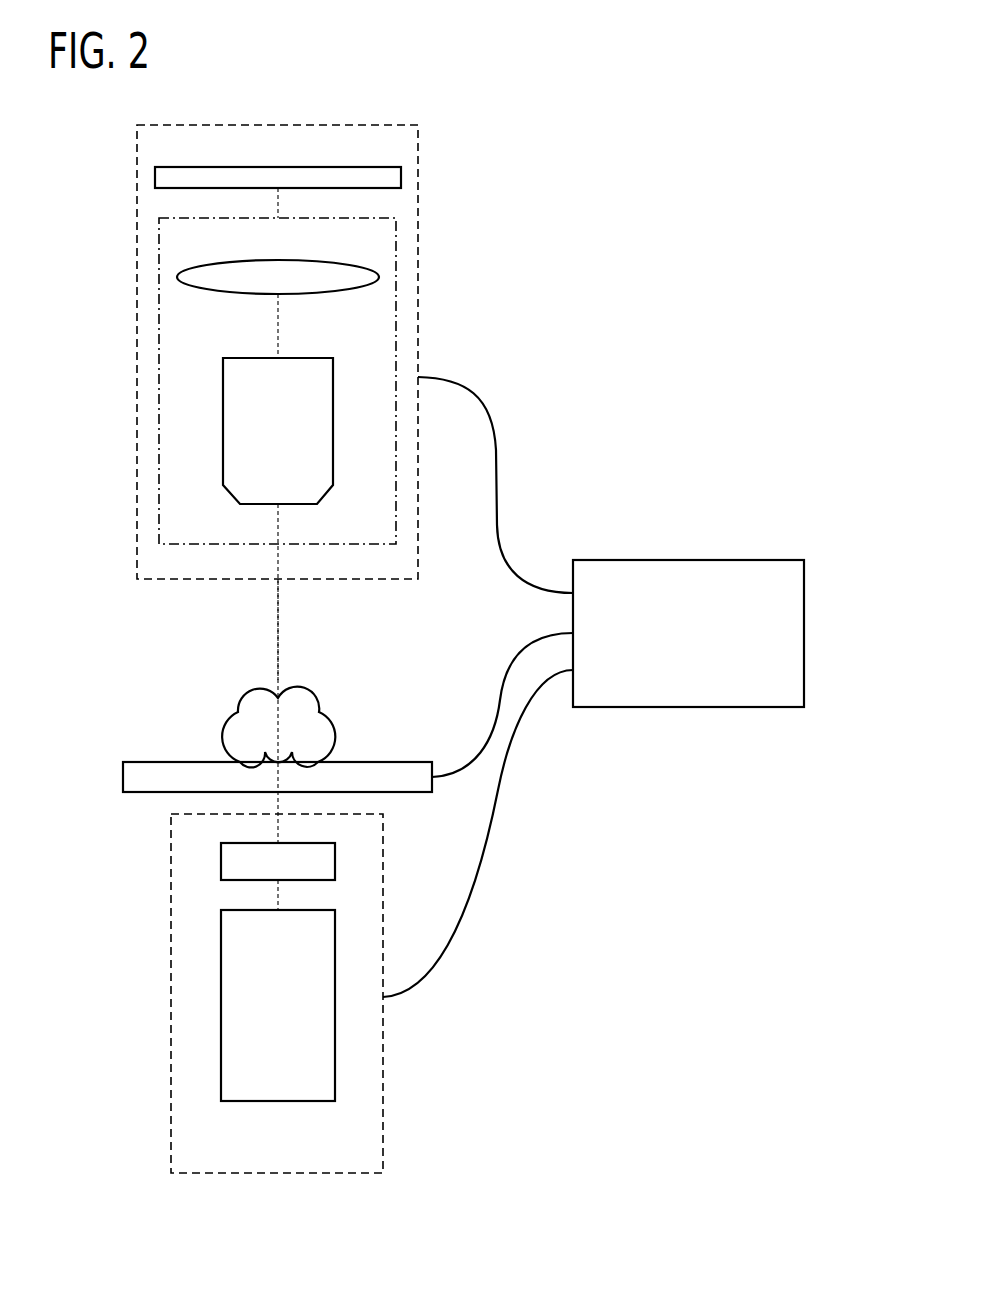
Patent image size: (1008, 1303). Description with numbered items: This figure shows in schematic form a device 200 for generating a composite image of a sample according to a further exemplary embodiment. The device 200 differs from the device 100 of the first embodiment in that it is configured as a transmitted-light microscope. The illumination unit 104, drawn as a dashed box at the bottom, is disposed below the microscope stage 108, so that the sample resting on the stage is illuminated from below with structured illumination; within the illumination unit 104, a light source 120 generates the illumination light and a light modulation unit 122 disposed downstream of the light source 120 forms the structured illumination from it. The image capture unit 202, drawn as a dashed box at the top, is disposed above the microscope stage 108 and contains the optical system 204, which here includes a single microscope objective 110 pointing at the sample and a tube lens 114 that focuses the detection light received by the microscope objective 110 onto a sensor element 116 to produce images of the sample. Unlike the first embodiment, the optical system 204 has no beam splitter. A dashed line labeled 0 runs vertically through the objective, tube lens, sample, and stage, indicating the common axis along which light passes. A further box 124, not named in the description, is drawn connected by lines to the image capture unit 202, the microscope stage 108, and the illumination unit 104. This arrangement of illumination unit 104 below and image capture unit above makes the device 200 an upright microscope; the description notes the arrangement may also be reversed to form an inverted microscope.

The device 200 is at (655, 131).
The image capture unit 202 is at (428, 195).
The optical system 204 is at (408, 293).
The sensor element 116 is at (160, 176).
The tube lens 114 is at (190, 278).
The microscope objective 110 is at (238, 430).
The optical axis 0 is at (278, 615).
The device 100 is at (293, 697).
The microscope stage 108 is at (125, 776).
The control unit 124 is at (804, 632).
The illumination unit 104 is at (398, 1066).
The light modulation unit 122 is at (323, 860).
The light source 120 is at (280, 1090).